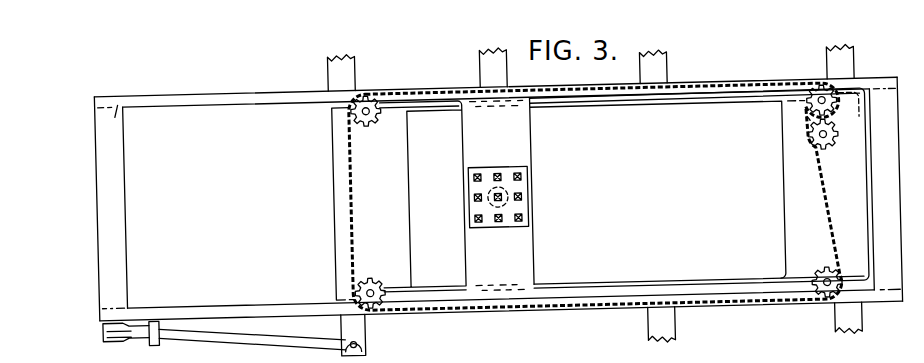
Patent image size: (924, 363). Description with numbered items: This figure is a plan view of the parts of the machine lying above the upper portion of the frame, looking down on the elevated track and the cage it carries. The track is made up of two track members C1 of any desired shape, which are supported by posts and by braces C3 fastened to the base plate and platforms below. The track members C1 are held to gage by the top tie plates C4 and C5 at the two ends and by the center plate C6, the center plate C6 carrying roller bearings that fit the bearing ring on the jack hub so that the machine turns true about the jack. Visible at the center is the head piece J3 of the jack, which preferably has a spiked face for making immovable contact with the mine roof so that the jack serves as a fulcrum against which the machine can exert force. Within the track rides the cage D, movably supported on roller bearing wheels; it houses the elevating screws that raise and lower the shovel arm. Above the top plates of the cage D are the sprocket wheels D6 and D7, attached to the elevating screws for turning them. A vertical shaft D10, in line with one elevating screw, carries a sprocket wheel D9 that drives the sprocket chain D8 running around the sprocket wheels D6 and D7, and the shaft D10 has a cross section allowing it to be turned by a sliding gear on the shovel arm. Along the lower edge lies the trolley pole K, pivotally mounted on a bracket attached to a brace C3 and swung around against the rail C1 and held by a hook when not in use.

The track member C1 is at (227, 73).
The brace C3 is at (333, 74).
The top tie plate C4 is at (126, 74).
The top tie plate C5 is at (889, 179).
The center plate C6 is at (520, 135).
The cage D is at (331, 238).
The sprocket wheel D6 is at (391, 79).
The sprocket wheel D7 is at (825, 96).
The sprocket chain D8 is at (760, 91).
The sprocket wheel D9 is at (818, 132).
The vertical shaft D10 is at (821, 142).
The head piece J3 is at (475, 197).
The trolley pole K is at (222, 328).